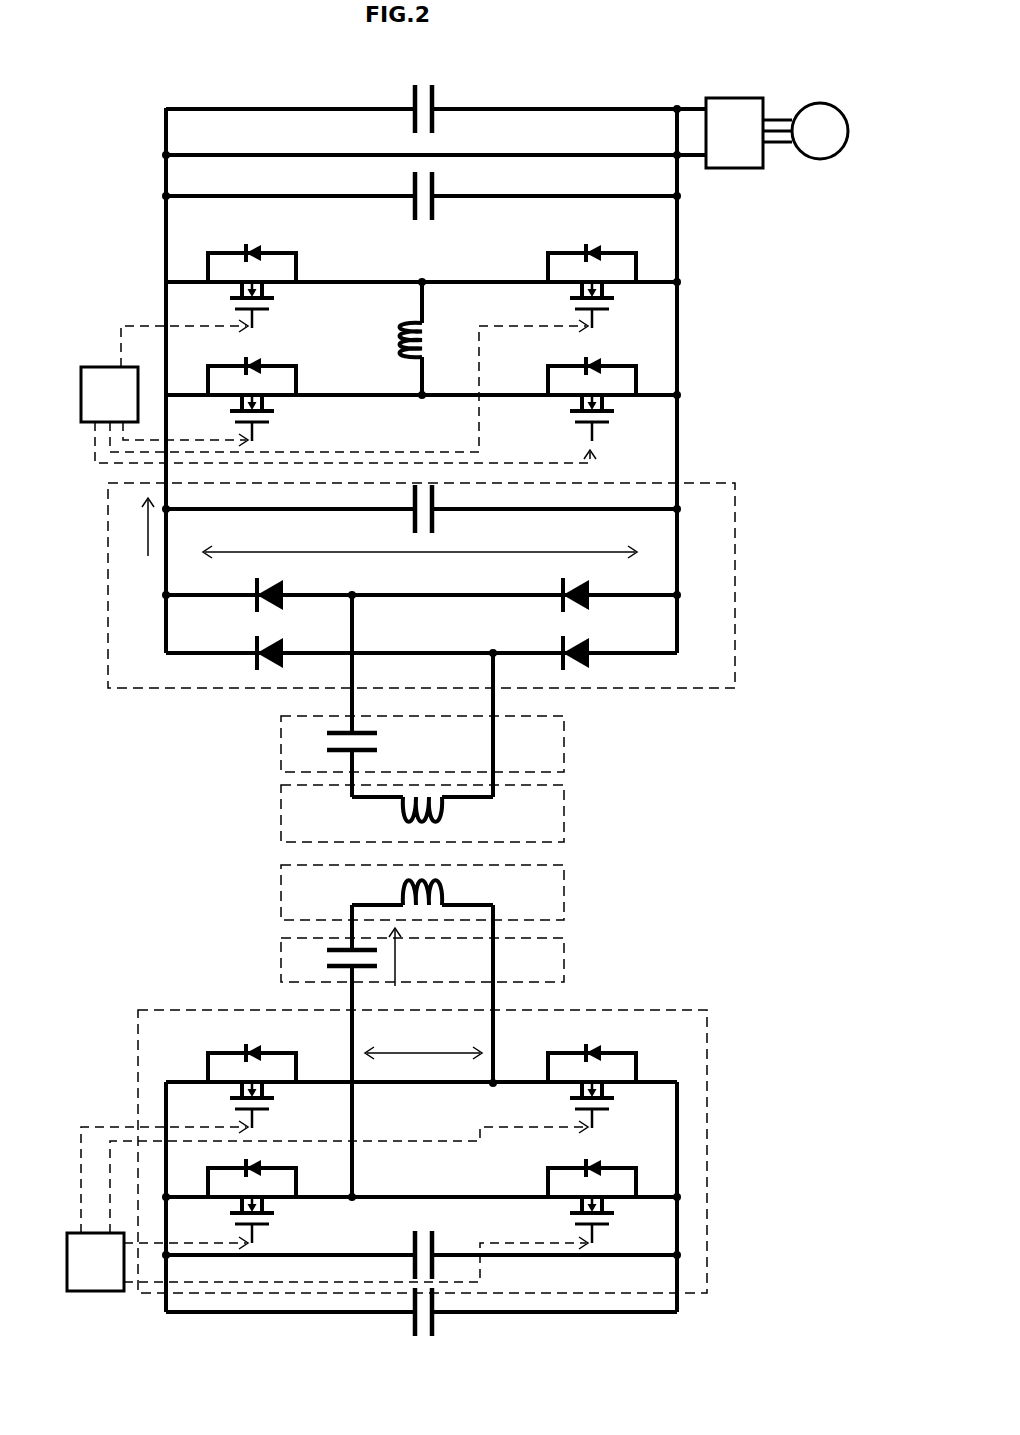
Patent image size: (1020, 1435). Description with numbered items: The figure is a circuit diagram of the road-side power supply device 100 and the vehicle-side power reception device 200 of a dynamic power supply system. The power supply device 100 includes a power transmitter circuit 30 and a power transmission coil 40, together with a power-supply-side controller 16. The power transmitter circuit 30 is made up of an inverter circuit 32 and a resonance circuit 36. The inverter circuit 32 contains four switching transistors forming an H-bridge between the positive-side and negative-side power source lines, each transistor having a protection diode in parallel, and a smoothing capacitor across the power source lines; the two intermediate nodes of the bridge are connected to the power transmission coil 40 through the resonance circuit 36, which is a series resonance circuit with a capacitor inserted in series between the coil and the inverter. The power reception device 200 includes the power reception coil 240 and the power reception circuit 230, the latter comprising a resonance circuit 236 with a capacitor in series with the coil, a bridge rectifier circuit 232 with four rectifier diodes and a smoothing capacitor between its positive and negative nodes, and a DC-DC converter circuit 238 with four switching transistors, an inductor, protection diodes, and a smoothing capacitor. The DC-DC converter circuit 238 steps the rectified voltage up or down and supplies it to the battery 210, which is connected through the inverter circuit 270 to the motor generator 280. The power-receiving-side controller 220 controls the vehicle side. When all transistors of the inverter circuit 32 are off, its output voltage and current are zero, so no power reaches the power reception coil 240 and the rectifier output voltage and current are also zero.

The power supply device 100 is at (211, 893).
The power reception device 200 is at (208, 812).
The battery 210 is at (444, 99).
The power-receiving-side controller 220 is at (110, 367).
The power reception circuit 230 is at (785, 248).
The rectifier circuit 232 is at (632, 690).
The resonance circuit 236 is at (566, 750).
The DC-DC converter circuit 238 is at (702, 182).
The power reception coil 240 is at (566, 820).
The inverter circuit 270 is at (723, 98).
The motor generator 280 is at (832, 103).
The power-supply-side controller 16 is at (108, 1291).
The power transmitter circuit 30 is at (733, 935).
The inverter circuit 32 is at (668, 1010).
The resonance circuit 36 is at (566, 965).
The power transmission coil 40 is at (566, 893).